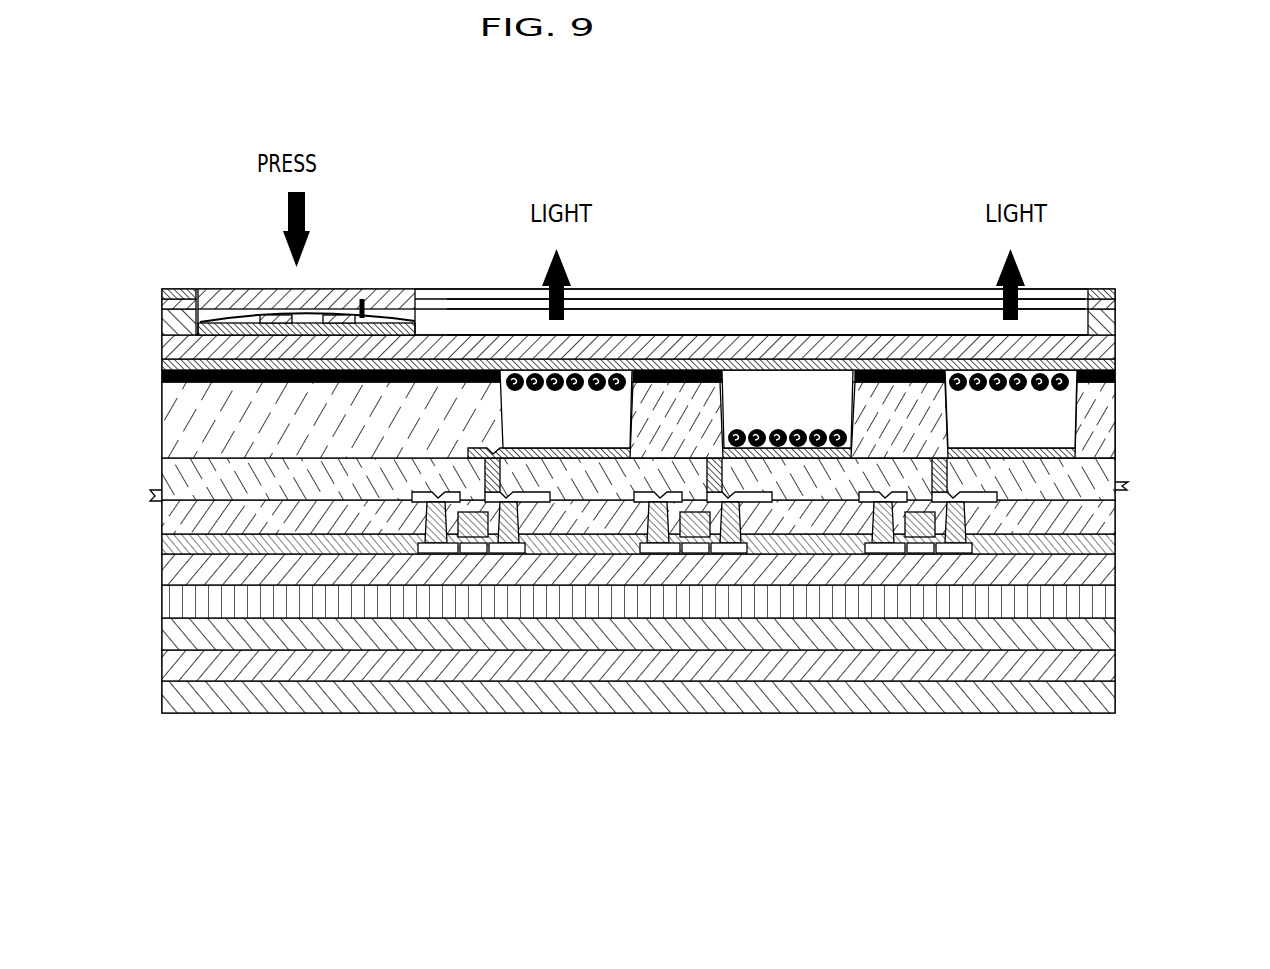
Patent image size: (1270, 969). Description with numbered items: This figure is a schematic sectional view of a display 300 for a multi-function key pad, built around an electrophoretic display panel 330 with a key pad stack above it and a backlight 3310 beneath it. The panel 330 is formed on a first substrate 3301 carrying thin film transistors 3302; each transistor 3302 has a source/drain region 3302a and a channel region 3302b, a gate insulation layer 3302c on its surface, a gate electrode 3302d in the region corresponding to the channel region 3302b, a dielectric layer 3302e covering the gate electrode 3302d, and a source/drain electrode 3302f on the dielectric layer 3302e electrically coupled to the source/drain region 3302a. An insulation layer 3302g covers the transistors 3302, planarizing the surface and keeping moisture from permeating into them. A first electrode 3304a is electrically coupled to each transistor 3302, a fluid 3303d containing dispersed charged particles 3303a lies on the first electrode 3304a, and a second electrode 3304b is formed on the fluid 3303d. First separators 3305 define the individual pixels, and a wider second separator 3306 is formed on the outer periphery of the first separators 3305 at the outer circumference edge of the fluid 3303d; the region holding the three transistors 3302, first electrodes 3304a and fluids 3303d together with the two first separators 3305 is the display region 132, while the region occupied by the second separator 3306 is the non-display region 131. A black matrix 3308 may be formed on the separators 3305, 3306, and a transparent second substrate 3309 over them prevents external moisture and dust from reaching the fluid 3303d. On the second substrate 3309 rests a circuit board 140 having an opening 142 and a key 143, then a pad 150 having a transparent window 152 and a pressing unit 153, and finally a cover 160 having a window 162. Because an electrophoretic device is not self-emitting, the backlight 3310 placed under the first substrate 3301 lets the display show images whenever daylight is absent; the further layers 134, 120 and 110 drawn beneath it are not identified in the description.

The display for a multi-function key pad 300 is at (141, 228).
The non-display region 131 is at (298, 204).
The display region 132 is at (638, 265).
The key 143 is at (362, 298).
The pressing unit 153 is at (396, 293).
The cover 160 is at (1117, 291).
The pad 150 is at (1117, 303).
The circuit board 140 is at (1117, 322).
The window 162 is at (843, 299).
The transparent window 152 is at (883, 302).
The opening 142 is at (930, 314).
The second substrate 3309 is at (682, 359).
The second electrode 3304b is at (1117, 365).
The first electrode 3304a is at (1077, 446).
The second separator 3306 is at (162, 395).
The black matrix 3308 is at (689, 372).
The first separator 3305 is at (745, 370).
The charged particles 3303a is at (608, 372).
The fluid 3303d is at (798, 384).
The insulation layer 3302g is at (162, 478).
The transistor 3302 is at (590, 655).
The source/drain region 3302a is at (437, 553).
The channel region 3302b is at (468, 553).
The gate insulation layer 3302c is at (367, 550).
The gate electrode 3302d is at (490, 530).
The dielectric layer 3302e is at (310, 517).
The source/drain electrode 3302f is at (537, 503).
The electrophoretic display panel 330 is at (657, 469).
The first substrate 3301 is at (1108, 573).
The backlight 3310 is at (1108, 603).
The lower protective layer 134 is at (1108, 632).
The cushion layer 120 is at (1108, 666).
The bottom cover 110 is at (1108, 697).